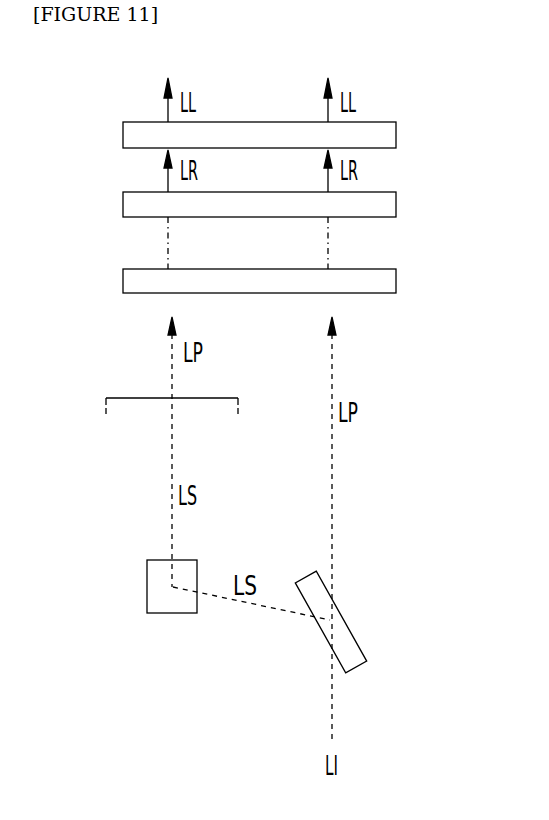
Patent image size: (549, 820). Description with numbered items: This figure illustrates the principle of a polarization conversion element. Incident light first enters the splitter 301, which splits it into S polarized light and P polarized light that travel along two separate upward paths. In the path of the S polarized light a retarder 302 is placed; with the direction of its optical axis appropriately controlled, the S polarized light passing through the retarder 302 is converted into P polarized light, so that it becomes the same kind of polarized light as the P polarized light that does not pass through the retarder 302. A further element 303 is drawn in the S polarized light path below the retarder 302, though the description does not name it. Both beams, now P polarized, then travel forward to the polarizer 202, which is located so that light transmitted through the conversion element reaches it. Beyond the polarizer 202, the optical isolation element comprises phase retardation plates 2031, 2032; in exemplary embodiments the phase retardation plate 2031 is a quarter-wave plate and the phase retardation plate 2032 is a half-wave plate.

The polarizer 202 is at (396, 282).
The phase retardation plate 2031 is at (396, 203).
The phase retardation plate 2032 is at (396, 135).
The splitter 301 is at (353, 640).
The retarder 302 is at (106, 407).
The light source 303 is at (147, 587).